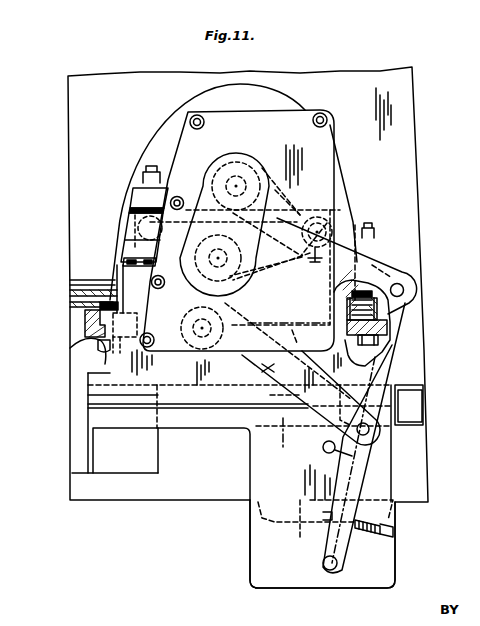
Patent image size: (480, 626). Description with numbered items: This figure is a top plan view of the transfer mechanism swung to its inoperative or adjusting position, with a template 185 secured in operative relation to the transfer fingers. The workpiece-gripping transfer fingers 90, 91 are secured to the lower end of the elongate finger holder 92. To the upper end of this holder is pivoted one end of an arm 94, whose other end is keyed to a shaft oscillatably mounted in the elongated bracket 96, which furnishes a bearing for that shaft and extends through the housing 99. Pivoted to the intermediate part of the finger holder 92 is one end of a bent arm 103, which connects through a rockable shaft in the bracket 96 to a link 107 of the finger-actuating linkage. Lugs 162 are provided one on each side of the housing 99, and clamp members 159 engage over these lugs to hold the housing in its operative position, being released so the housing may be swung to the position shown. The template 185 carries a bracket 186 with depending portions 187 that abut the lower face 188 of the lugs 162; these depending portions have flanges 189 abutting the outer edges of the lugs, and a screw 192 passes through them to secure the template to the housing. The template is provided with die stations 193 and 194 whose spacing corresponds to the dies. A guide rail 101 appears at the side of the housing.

The housing 99 is at (163, 122).
The bracket 96 is at (290, 128).
The arm 94 is at (370, 263).
The guide rail 101 is at (78, 283).
The lugs 162 is at (100, 302).
The screw 192 is at (118, 288).
The flanges 189 is at (82, 318).
The link 107 is at (83, 323).
The depending portions 187 is at (90, 338).
The lower face 188 is at (106, 339).
The bracket 186 is at (88, 372).
The clamp members 159 is at (85, 453).
The bent arm 103 is at (288, 351).
The die station 194 is at (323, 446).
The finger holder 92 is at (364, 456).
The template 185 is at (262, 541).
The transfer finger 90 is at (322, 542).
The transfer finger 91 is at (346, 545).
The die station 193 is at (330, 570).